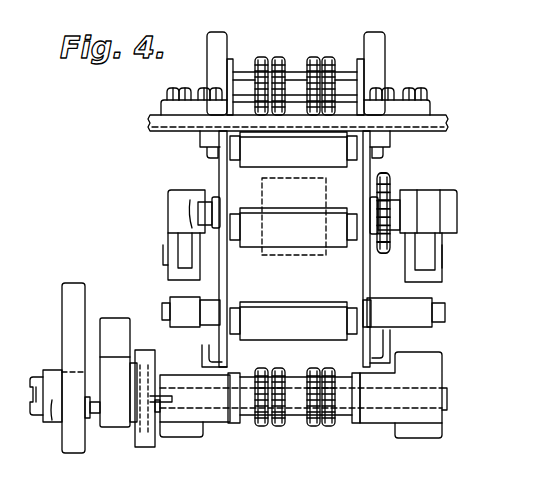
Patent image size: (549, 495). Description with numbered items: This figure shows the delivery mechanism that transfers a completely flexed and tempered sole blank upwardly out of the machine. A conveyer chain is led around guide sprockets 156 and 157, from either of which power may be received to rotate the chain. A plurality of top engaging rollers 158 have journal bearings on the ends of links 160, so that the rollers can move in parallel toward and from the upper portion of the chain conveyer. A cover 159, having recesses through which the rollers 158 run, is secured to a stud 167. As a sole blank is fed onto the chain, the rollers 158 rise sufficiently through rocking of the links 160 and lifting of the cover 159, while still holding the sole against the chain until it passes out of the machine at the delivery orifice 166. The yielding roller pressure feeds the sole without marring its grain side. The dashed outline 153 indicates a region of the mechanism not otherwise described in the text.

The dashed outline region 153 is at (326, 256).
The guide sprocket 156 is at (329, 57).
The guide sprocket 157 is at (262, 428).
The top engaging rollers 158 is at (281, 150).
The cover 159 is at (219, 283).
The links 160 is at (219, 172).
The delivery orifice 166 is at (385, 337).
The stud 167 is at (200, 212).